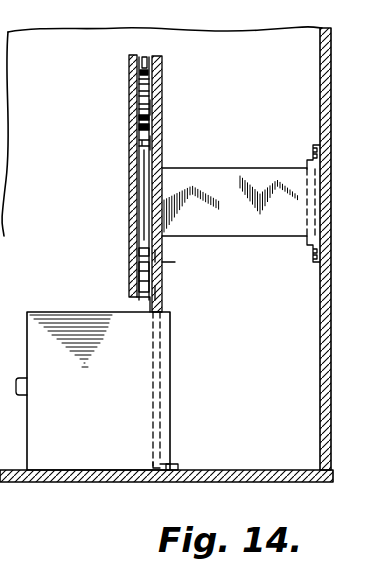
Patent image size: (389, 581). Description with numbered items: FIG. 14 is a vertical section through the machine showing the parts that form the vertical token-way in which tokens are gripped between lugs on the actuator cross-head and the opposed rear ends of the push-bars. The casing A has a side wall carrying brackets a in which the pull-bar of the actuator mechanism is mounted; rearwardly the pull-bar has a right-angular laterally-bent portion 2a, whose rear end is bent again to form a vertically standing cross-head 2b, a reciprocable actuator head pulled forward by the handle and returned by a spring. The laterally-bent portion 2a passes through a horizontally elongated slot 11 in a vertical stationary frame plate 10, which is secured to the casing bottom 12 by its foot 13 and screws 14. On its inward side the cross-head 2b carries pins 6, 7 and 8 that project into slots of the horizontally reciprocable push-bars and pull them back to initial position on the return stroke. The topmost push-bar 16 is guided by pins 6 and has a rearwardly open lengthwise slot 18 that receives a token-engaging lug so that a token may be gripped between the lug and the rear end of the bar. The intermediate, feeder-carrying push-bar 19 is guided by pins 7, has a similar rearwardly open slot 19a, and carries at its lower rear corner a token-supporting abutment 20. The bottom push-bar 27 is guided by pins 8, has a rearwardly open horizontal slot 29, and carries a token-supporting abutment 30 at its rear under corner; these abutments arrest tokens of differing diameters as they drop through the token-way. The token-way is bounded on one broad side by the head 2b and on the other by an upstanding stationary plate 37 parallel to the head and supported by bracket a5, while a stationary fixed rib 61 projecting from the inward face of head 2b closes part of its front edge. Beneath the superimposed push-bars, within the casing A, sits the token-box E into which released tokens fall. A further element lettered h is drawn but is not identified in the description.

The upstanding stationary plate 37 is at (136, 60).
The pins 6 is at (163, 62).
The lengthwise-extending slot 18 is at (145, 80).
The topmost push-bar 16 is at (143, 93).
The intermediate feeder-carrying push-bar 19 is at (143, 106).
The bracket a5 is at (134, 118).
The lengthwise extending slot 19a is at (141, 128).
The token-supporting abutment 20 is at (144, 143).
The pins 7 is at (160, 143).
The cross-head 2b is at (163, 124).
The laterally-bent portion 2a is at (249, 173).
The casing A is at (331, 137).
The opening h is at (320, 202).
The brackets a is at (307, 243).
The horizontally elongated slot 11 is at (162, 169).
The stationary fixed rib 61 is at (149, 200).
The bottom push-bar 27 is at (137, 253).
The horizontal slot 29 is at (143, 275).
The token-supporting abutment 30 is at (143, 298).
The pins 8 is at (163, 293).
The vertical stationary frame plate 10 is at (163, 268).
The token-box E is at (93, 391).
The screws 14 is at (175, 465).
The foot 13 is at (178, 468).
The bottom 12 is at (185, 470).